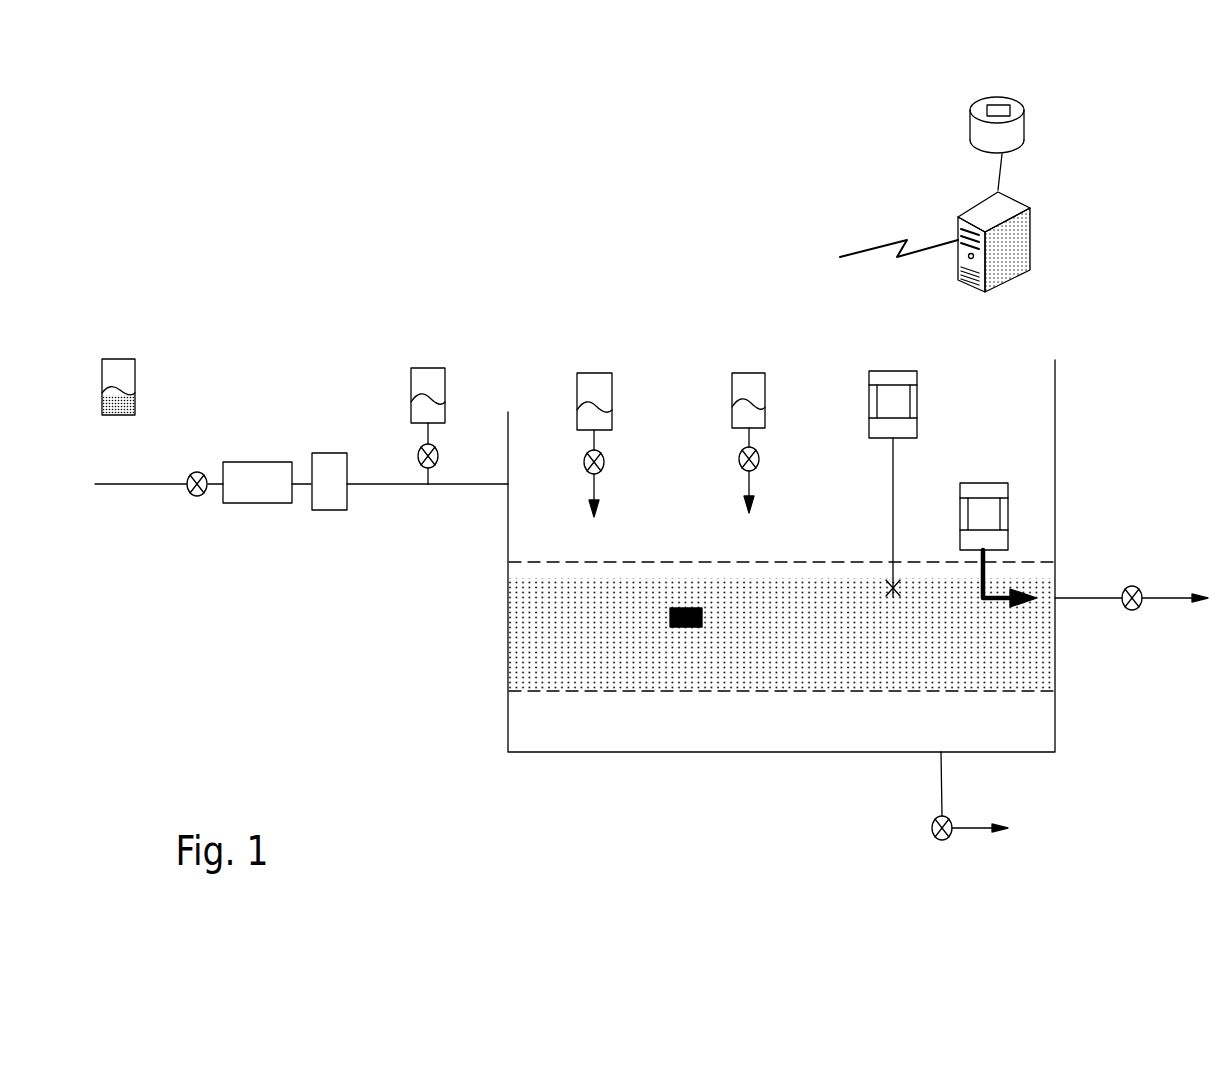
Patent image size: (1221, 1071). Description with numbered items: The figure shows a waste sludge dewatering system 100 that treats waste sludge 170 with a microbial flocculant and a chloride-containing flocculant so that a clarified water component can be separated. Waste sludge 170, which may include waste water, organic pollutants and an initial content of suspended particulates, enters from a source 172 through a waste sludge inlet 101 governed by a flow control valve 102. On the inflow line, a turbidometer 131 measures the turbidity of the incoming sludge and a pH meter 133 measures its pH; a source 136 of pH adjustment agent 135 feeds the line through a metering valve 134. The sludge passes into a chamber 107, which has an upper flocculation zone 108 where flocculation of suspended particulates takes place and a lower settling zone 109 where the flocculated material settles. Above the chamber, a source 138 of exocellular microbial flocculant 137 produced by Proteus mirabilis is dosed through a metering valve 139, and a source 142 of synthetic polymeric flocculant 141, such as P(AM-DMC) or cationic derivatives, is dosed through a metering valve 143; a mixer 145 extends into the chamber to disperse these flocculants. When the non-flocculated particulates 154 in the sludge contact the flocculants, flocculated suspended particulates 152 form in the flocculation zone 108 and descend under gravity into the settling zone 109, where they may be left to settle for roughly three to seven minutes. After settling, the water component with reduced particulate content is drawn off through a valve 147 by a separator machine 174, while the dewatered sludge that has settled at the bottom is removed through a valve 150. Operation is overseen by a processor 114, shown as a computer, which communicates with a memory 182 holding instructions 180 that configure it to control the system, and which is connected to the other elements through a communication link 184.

The waste sludge dewatering system 100 is at (239, 174).
The waste sludge inlet 101 is at (133, 480).
The flow control valve 102 is at (193, 497).
The chamber 107 is at (468, 628).
The flocculation zone 108 is at (518, 602).
The settling zone 109 is at (561, 733).
The processor 114 is at (985, 292).
The turbidometer 131 is at (262, 505).
The pH meter 133 is at (322, 512).
The metering valve 134 is at (442, 455).
The pH adjustment agent 135 is at (438, 412).
The source of pH adjustment agent 136 is at (445, 383).
The exocellular microbial flocculant 137 is at (605, 422).
The source of exocellular microbial flocculant 138 is at (575, 393).
The metering valve 139 is at (580, 458).
The synthetic polymeric flocculant 141 is at (732, 412).
The source of synthetic polymeric flocculant 142 is at (732, 380).
The metering valve 143 is at (737, 458).
The mixer 145 is at (918, 398).
The valve 147 is at (1140, 615).
The valve 150 is at (932, 833).
The flocculated suspended particulates 152 is at (688, 605).
The non-flocculated suspended particulates 154 is at (1023, 650).
The waste sludge 170 is at (135, 400).
The source 172 is at (135, 373).
The separator machine 174 is at (1008, 510).
The instructions 180 is at (985, 105).
The memory 182 is at (980, 150).
The communication link 184 is at (908, 244).